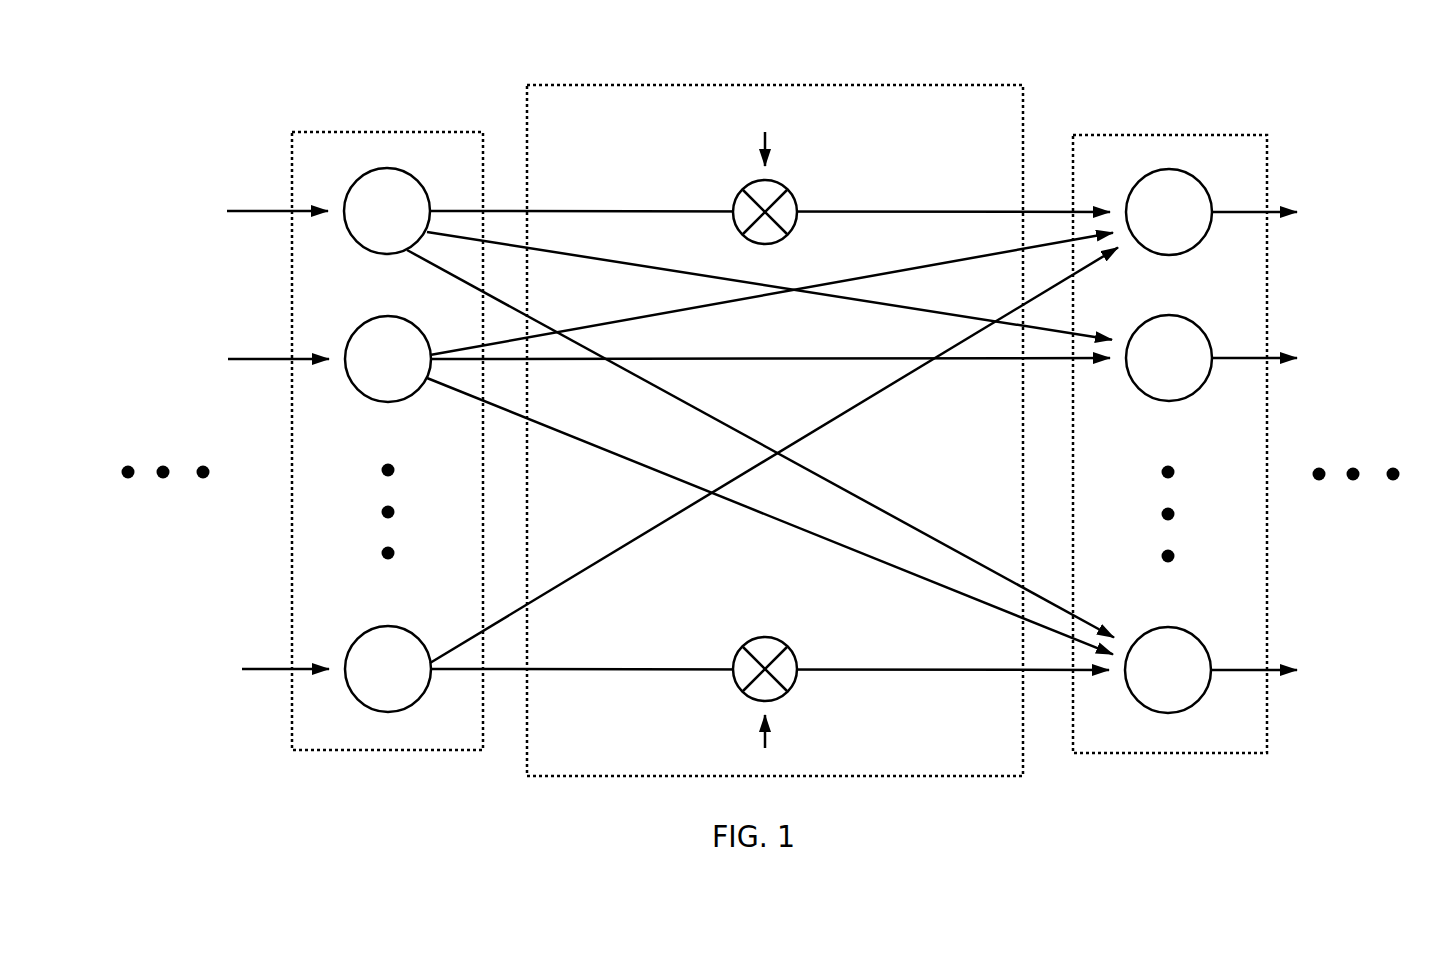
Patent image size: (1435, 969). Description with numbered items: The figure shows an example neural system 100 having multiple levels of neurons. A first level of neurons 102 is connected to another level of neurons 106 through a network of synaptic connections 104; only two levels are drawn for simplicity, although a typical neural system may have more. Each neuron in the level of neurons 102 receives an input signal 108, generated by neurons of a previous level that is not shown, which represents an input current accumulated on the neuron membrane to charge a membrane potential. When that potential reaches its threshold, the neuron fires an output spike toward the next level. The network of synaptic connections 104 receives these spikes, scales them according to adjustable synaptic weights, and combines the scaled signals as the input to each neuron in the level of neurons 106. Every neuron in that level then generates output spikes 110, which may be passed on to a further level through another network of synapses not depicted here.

The neural system 100 is at (201, 49).
The level of neurons 102 is at (341, 132).
The network of synaptic connections 104 is at (957, 85).
The level of neurons 106 is at (1153, 135).
The input signal 108 is at (200, 648).
The output spikes 110 is at (1357, 172).